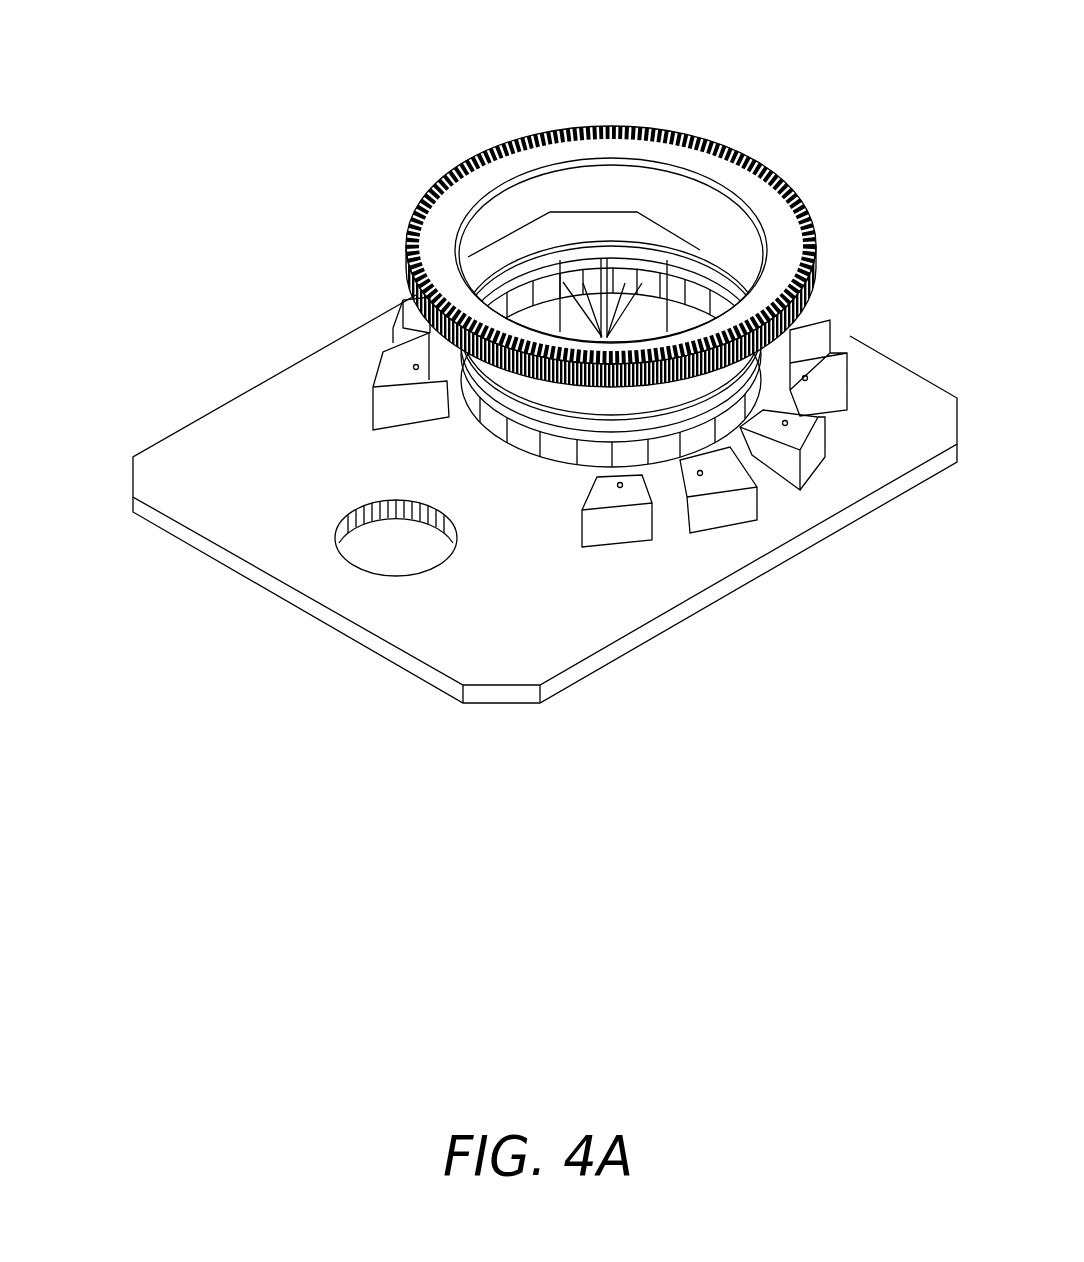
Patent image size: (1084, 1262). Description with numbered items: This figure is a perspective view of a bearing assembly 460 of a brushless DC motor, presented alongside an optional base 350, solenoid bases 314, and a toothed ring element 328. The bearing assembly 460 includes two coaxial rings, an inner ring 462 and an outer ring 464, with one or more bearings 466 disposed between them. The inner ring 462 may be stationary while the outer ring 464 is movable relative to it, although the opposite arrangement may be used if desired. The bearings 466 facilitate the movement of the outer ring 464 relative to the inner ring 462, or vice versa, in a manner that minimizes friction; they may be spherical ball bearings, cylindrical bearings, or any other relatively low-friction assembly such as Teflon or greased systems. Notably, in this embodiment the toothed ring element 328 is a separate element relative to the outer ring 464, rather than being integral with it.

The toothed ring element 328 is at (524, 158).
The base 350 is at (233, 443).
The solenoid bases 314 is at (618, 527).
The bearing assembly 460 is at (473, 430).
The inner ring 462 is at (500, 447).
The outer ring 464 is at (525, 447).
The bearings 466 is at (398, 330).